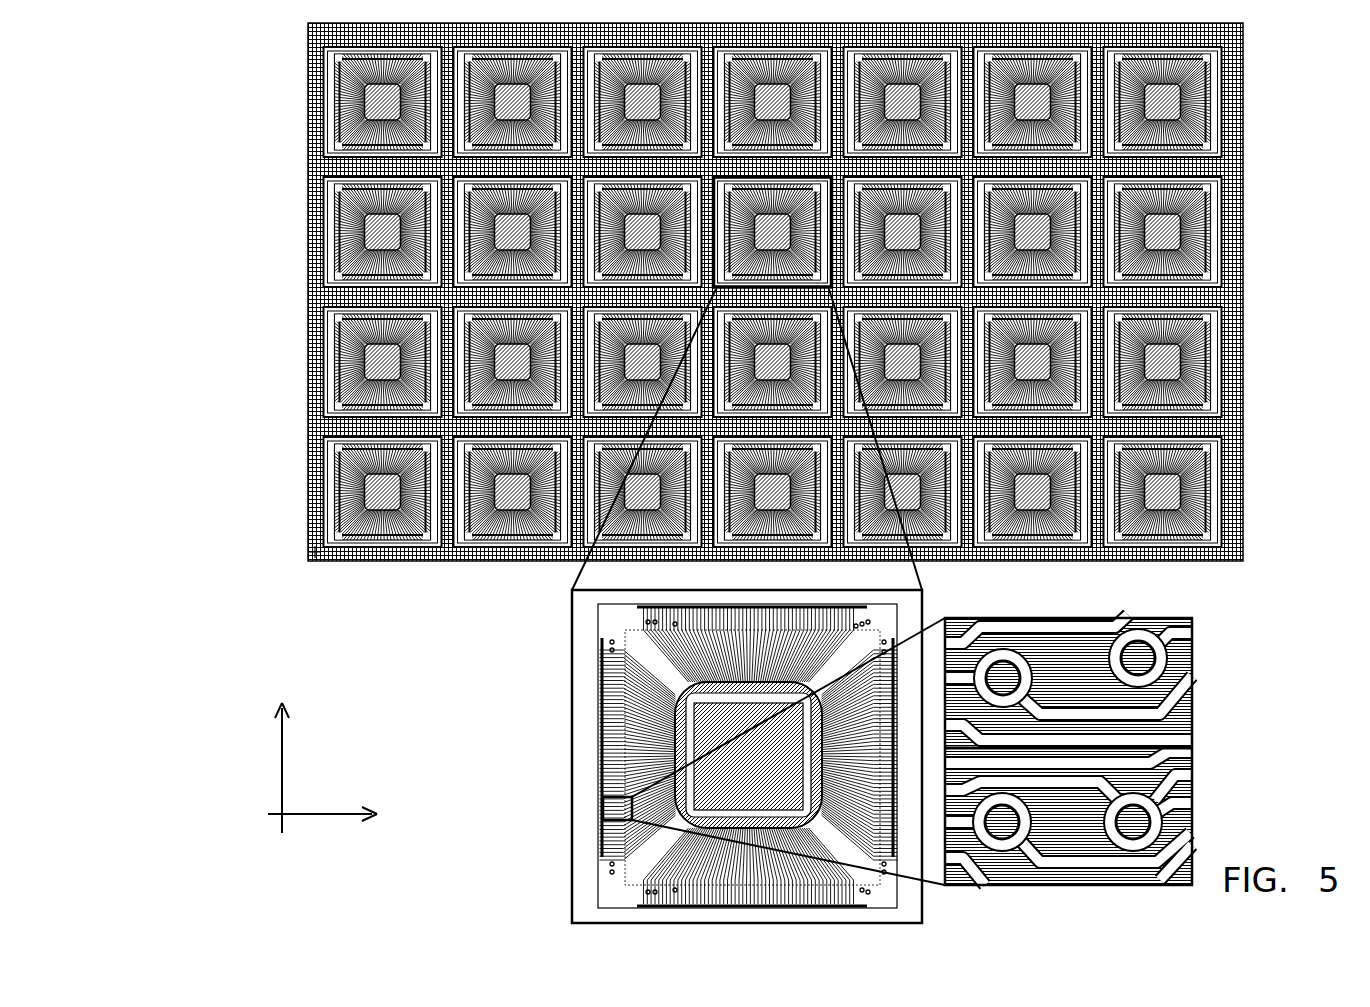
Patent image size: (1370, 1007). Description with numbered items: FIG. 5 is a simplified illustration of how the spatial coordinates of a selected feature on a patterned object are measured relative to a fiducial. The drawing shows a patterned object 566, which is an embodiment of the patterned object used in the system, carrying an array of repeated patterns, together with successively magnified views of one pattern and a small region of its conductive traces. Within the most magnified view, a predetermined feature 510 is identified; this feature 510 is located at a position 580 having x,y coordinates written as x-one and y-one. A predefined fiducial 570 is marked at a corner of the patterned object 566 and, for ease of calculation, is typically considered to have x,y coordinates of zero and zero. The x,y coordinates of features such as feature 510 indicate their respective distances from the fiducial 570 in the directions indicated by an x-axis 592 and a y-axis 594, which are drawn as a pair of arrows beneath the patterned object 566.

The patterned object 566 is at (1225, 172).
The predefined fiducial 570 is at (313, 553).
The predetermined feature 510 is at (1148, 806).
The position 580 is at (1133, 822).
The y-axis 594 is at (280, 778).
The x-axis 592 is at (318, 816).